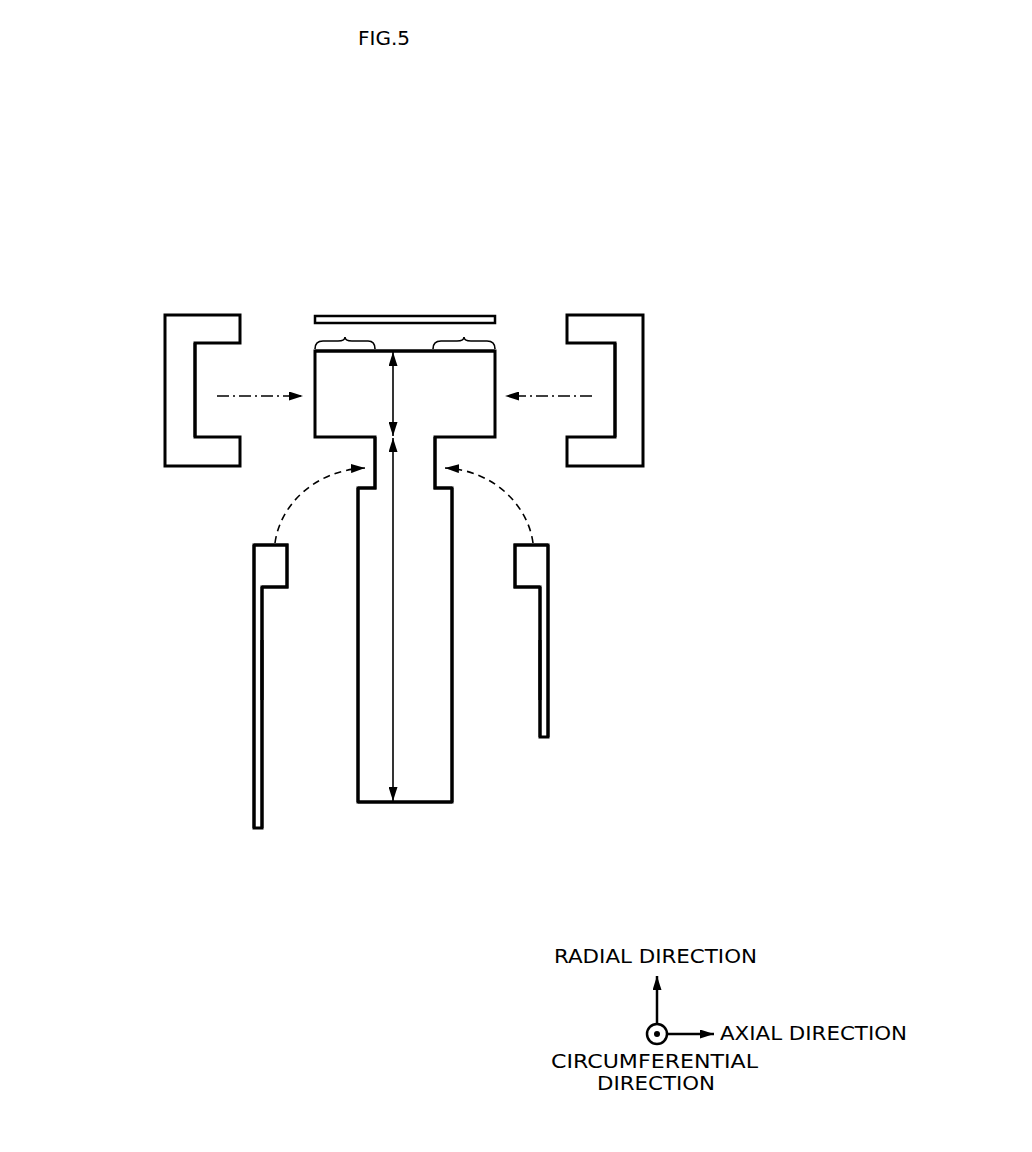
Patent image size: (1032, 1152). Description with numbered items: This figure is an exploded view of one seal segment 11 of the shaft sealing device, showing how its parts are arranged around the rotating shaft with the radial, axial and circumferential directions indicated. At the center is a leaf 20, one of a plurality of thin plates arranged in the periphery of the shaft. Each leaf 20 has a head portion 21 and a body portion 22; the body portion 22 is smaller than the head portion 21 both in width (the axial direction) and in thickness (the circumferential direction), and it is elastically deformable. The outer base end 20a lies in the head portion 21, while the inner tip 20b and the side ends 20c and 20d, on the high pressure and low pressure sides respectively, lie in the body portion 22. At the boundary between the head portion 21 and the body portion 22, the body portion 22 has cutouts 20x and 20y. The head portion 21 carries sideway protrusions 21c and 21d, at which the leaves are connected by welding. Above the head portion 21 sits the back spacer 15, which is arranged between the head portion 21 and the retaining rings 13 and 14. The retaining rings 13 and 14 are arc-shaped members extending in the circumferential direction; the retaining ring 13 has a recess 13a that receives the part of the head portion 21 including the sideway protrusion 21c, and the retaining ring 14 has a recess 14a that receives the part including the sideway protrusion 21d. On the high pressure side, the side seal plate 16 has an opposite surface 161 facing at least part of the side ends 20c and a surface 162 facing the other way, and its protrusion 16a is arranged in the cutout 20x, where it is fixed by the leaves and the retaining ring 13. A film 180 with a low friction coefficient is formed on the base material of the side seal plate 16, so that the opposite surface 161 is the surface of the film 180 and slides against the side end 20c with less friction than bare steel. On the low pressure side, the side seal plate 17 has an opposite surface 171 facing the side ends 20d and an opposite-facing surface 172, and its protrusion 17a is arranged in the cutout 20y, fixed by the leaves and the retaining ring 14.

The seal segment 11 is at (580, 197).
The leaf 20 is at (436, 808).
The base end 20a is at (416, 350).
The tip 20b is at (382, 803).
The side end 20c is at (358, 795).
The side end 20d is at (452, 750).
The cutout 20x is at (375, 451).
The cutout 20y is at (435, 451).
The head portion 21 is at (395, 393).
The body portion 22 is at (395, 565).
The sideway protrusion 21c is at (345, 339).
The sideway protrusion 21d is at (464, 339).
The back spacer 15 is at (381, 315).
The retaining ring 13 is at (165, 343).
The recess 13a is at (197, 380).
The retaining ring 14 is at (643, 343).
The recess 14a is at (613, 380).
The high pressure-side side seal plate 16 is at (253, 640).
The protrusion 16a is at (275, 567).
The opposite surface 161 is at (262, 665).
The surface 162 is at (254, 683).
The film 180 is at (262, 610).
The low pressure-side side seal plate 17 is at (549, 640).
The protrusion 17a is at (528, 567).
The opposite surface 171 is at (540, 665).
The surface 172 is at (548, 683).